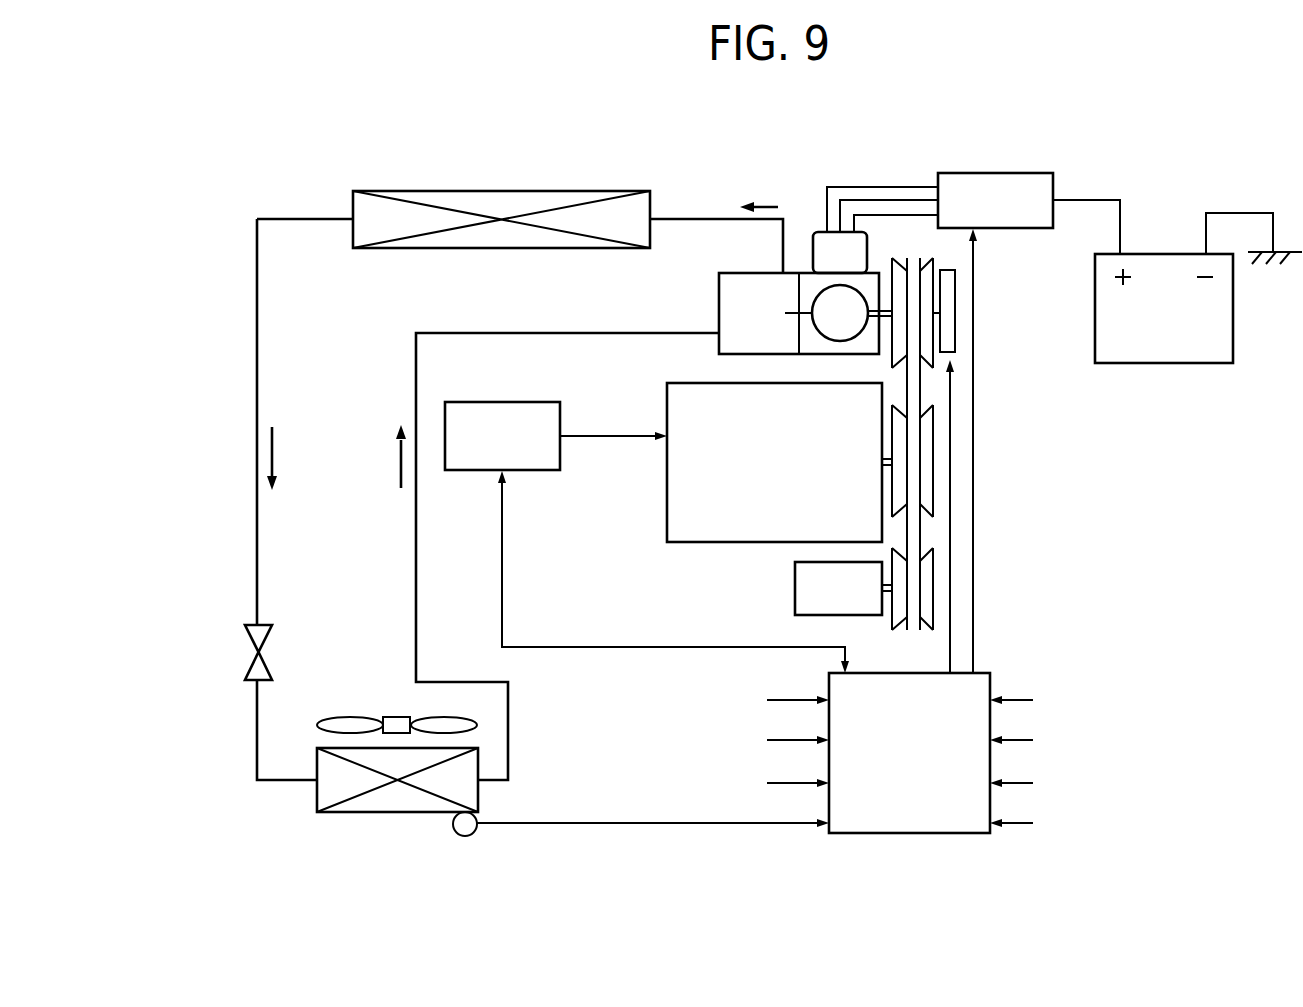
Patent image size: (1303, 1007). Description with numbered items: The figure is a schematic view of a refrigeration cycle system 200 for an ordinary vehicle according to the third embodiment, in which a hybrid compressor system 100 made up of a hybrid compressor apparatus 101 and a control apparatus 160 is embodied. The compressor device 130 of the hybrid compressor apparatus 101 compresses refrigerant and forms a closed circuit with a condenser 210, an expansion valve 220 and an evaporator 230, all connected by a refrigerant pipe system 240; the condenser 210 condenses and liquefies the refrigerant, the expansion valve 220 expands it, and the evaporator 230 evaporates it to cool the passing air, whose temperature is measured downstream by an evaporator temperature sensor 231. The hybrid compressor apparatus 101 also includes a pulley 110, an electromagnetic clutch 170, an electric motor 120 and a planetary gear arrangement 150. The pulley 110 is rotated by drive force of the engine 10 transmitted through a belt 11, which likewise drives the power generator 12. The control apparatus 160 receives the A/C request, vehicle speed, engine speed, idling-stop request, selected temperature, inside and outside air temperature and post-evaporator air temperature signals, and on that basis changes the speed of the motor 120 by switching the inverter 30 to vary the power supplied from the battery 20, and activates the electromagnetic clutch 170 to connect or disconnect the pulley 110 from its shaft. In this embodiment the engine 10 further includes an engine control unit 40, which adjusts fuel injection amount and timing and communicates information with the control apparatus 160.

The refrigeration cycle system 200 is at (366, 185).
The condenser 210 is at (527, 203).
The expansion valve 220 is at (245, 636).
The evaporator 230 is at (355, 808).
The evaporator temperature sensor 231 is at (462, 838).
The refrigerant pipe system 240 is at (257, 312).
The hybrid compressor system 100 is at (1065, 425).
The hybrid compressor apparatus 101 is at (985, 366).
The pulley 110 is at (928, 288).
The electric motor 120 is at (825, 238).
The compressor device 130 is at (719, 290).
The planetary gear arrangement 150 is at (822, 307).
The control apparatus 160 is at (977, 690).
The electromagnetic clutch 170 is at (940, 315).
The engine 10 is at (708, 388).
The belt 11 is at (912, 386).
The power generator 12 is at (795, 589).
The battery 20 is at (1162, 265).
The inverter 30 is at (1052, 185).
The engine control unit 40 is at (485, 402).